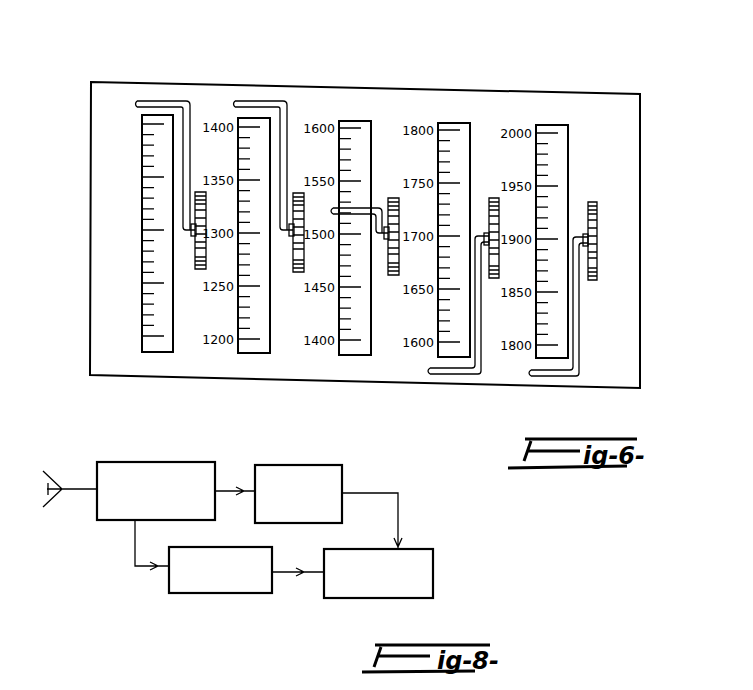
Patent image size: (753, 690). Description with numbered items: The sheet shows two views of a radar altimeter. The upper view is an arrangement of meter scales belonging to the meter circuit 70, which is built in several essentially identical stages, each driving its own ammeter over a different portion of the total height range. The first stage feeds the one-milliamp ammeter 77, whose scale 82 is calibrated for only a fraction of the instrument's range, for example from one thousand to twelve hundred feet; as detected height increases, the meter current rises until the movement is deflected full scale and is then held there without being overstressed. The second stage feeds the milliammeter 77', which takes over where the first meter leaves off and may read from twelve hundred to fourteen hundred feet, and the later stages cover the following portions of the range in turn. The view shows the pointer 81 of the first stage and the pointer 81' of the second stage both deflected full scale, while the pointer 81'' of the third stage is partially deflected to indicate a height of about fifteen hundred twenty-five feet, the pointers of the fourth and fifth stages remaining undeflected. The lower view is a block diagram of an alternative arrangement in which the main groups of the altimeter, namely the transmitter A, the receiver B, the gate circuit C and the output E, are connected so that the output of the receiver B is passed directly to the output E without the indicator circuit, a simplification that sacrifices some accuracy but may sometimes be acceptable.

In FIG. 6, the meter circuit 70 is at (256, 72).
In FIG. 6, the pointer 81 is at (166, 141).
In FIG. 6, the pointer 81' is at (277, 147).
In FIG. 6, the pointer 81'' is at (370, 212).
In FIG. 6, the ammeter 77 is at (196, 258).
In FIG. 6, the milliammeter 77' is at (296, 259).
In FIG. 6, the scale 82 is at (155, 343).
In FIG. 8, the transmitter A is at (157, 462).
In FIG. 8, the receiver B is at (169, 583).
In FIG. 8, the gate circuit C is at (303, 465).
In FIG. 8, the output E is at (433, 552).